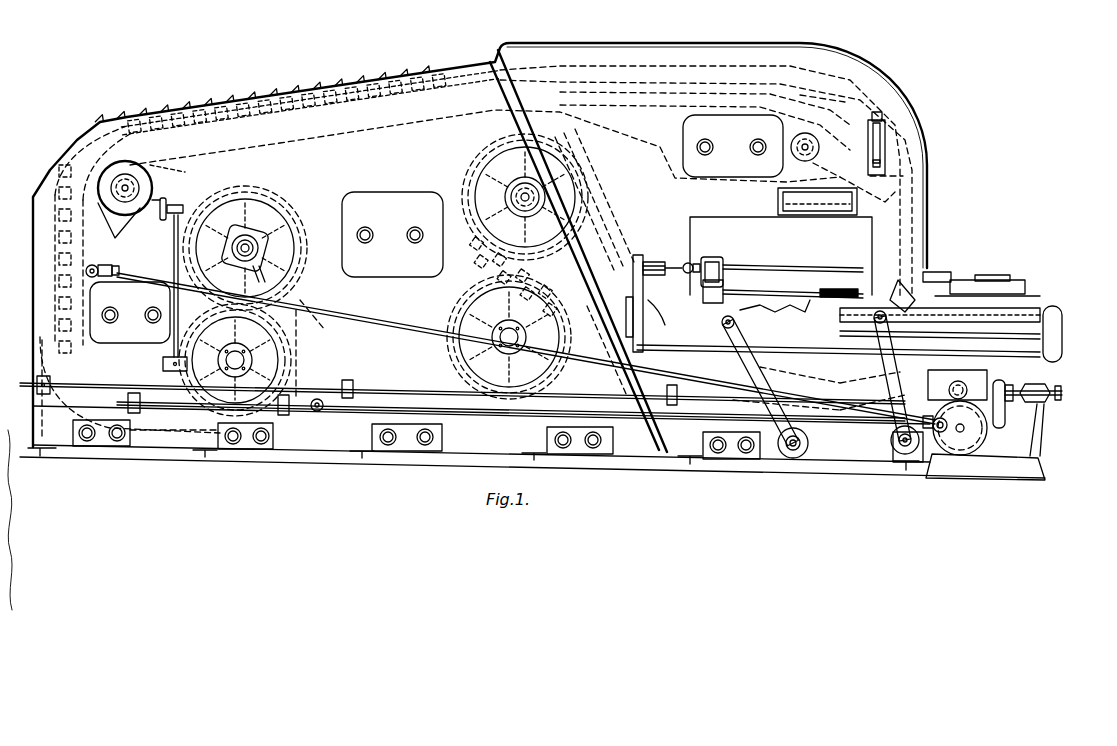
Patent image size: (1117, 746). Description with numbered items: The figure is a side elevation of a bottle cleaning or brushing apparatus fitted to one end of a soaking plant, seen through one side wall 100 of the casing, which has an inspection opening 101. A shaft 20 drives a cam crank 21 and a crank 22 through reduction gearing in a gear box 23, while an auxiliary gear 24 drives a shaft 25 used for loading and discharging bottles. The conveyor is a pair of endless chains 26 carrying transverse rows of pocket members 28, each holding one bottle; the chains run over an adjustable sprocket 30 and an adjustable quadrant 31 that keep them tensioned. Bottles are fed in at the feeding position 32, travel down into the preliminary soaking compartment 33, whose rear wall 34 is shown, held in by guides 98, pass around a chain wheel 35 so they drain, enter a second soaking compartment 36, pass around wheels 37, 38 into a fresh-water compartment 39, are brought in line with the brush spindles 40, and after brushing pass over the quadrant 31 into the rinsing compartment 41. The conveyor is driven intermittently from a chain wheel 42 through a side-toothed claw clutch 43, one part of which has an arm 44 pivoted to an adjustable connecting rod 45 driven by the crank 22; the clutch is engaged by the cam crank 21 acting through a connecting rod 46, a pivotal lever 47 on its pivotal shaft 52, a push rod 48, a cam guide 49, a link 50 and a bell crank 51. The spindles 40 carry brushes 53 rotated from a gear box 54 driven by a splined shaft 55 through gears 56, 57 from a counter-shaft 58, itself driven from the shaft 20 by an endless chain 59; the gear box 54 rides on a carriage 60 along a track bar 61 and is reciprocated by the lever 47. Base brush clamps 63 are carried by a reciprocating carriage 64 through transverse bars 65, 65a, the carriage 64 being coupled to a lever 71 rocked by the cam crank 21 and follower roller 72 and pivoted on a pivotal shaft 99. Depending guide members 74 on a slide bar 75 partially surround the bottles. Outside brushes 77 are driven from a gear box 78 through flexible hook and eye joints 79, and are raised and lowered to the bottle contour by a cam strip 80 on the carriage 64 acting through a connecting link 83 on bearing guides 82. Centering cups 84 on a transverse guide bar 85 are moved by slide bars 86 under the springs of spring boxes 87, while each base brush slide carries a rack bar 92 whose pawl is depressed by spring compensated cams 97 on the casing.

The shaft 20 is at (1047, 400).
The cam crank 21 is at (895, 360).
The crank 22 is at (980, 440).
The gear box 23 is at (987, 385).
The auxiliary gear 24 is at (1006, 415).
The shaft 25 is at (37, 388).
The endless chains 26 is at (838, 107).
The carrier or pocket members 28 is at (293, 93).
The adjustable sprocket 30 is at (290, 220).
The adjustable quadrant 31 is at (893, 183).
The feeding position 32 is at (33, 292).
The preliminary soaking compartment 33 is at (87, 377).
The rear wall 34 is at (330, 312).
The chain wheel 35 is at (308, 371).
The second soaking compartment 36 is at (487, 337).
The wheel 37 is at (560, 372).
The wheel 38 is at (472, 173).
The compartment 39 is at (717, 367).
The brush spindles 40 is at (760, 296).
The fresh water rinsing compartment 41 is at (622, 128).
The chain wheel 42 is at (180, 170).
The side-toothed claw clutch 43 is at (153, 185).
The extended arm 44 is at (105, 272).
The adjustable connecting rod 45 is at (165, 279).
The connecting rod 46 is at (810, 395).
The pivotal lever 47 is at (757, 368).
The push rod 48 is at (617, 410).
The cam guide or scroll 49 is at (165, 297).
The link 50 is at (178, 318).
The bell crank 51 is at (103, 200).
The pivotal shaft 52 is at (795, 450).
The brush 53 is at (826, 293).
The gear box 54 is at (712, 258).
The splined shaft 55 is at (767, 268).
The gear 56 is at (657, 260).
The gear 57 is at (633, 290).
The counter-shaft 58 is at (1073, 363).
The endless chain 59 is at (1062, 383).
The carriage 60 is at (770, 320).
The track bar 61 is at (795, 320).
The clamps or supports 63 is at (905, 280).
The reciprocating carriage 64 is at (876, 310).
The transverse bar 65 is at (1010, 290).
The transverse bar 65a is at (975, 284).
The lever 71 is at (925, 420).
The follower roller 72 is at (930, 465).
The depending guide members 74 is at (925, 272).
The slide bar 75 is at (1020, 297).
The outside brushes 77 is at (940, 331).
The gear box 78 is at (1062, 340).
The flexible hook and eye joints 79 is at (1033, 388).
The cam strip 80 is at (848, 352).
The bearing guide 82 is at (1062, 322).
The connecting link 83 is at (940, 342).
The centering cups 84 is at (853, 297).
The transverse guide bar 85 is at (818, 285).
The slide bars 86 is at (838, 342).
The spring boxes 87 is at (652, 305).
The rack bar 92 is at (947, 280).
The spring compensated cams 97 is at (938, 258).
The guides 98 is at (185, 432).
The pivotal shaft 99 is at (903, 450).
The side wall 100 is at (435, 130).
The inspection opening 101 is at (717, 217).